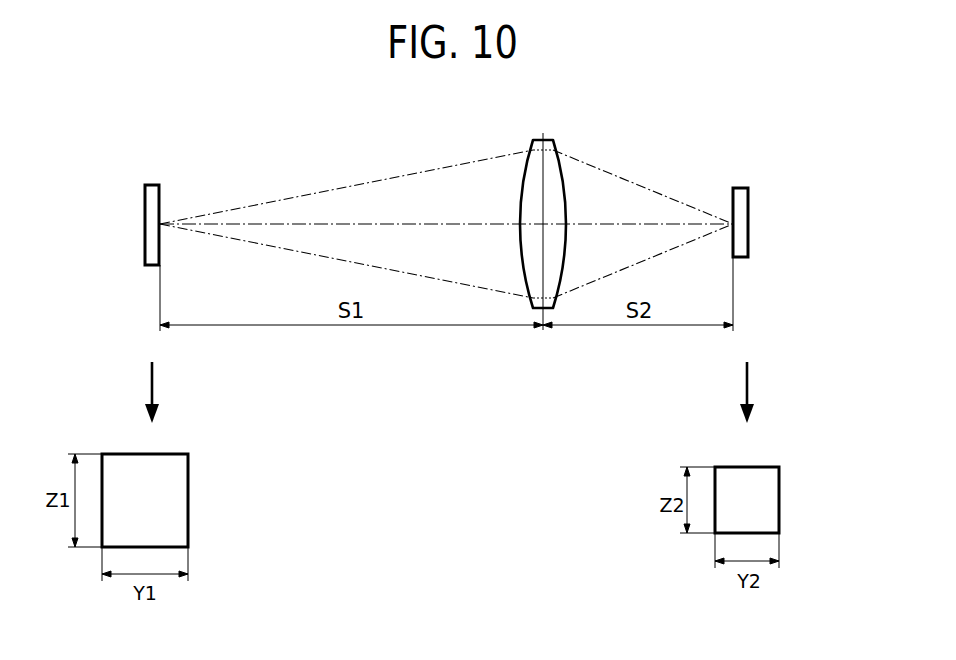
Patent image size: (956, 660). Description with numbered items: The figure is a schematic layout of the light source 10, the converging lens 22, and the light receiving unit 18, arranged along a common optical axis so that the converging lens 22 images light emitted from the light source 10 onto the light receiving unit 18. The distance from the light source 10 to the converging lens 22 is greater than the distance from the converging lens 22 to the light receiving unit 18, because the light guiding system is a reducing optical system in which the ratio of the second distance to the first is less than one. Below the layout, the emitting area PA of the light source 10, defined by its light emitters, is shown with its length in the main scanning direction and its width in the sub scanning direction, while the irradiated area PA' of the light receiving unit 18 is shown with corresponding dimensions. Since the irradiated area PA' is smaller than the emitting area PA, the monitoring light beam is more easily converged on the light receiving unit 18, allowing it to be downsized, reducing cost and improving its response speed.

The light source 10 is at (150, 185).
The converging lens 22 is at (548, 140).
The light receiving unit 18 is at (740, 188).
The emitting area PA is at (168, 500).
The irradiated area PA' is at (773, 500).